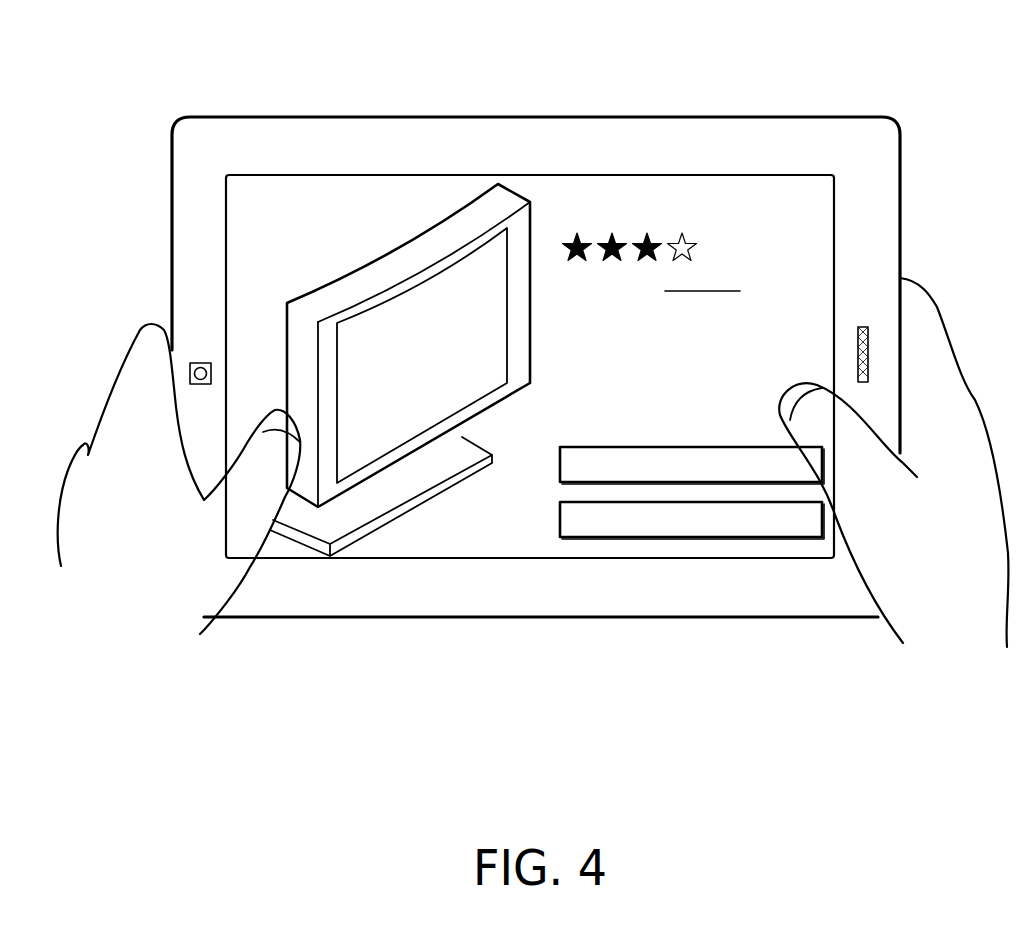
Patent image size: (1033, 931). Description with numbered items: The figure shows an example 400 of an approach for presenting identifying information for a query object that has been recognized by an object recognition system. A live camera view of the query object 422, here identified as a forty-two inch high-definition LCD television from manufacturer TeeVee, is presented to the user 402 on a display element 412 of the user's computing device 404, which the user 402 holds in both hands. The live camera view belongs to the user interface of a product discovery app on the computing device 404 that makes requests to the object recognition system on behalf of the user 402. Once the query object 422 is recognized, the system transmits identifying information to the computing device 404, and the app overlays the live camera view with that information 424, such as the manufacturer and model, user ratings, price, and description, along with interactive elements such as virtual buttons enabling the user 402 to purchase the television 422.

The example approach 400 is at (97, 160).
The user 402 is at (145, 617).
The computing device 404 is at (312, 617).
The display element 412 is at (708, 558).
The query object 422 is at (372, 210).
The product information 424 is at (763, 200).